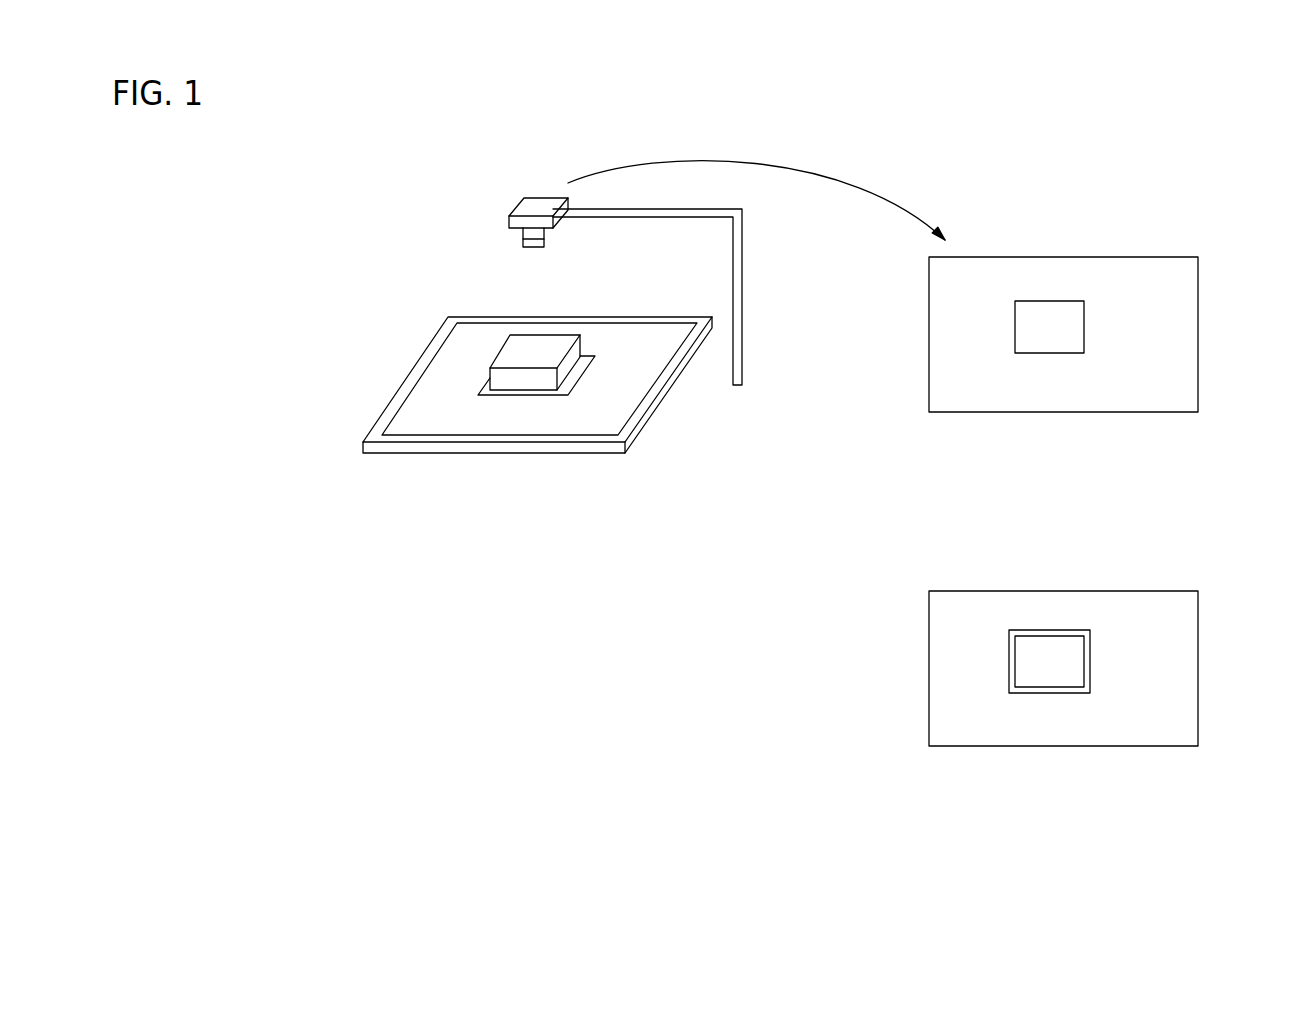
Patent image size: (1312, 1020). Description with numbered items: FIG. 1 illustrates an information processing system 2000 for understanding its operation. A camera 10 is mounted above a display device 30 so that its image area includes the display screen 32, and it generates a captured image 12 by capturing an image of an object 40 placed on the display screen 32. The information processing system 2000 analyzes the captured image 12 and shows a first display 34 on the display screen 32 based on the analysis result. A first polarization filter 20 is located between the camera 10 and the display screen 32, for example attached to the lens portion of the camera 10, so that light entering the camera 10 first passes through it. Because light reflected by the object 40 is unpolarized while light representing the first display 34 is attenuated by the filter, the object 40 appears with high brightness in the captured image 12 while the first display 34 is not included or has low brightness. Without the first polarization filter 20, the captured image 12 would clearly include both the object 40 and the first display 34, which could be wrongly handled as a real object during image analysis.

The information processing system 2000 is at (385, 158).
The camera 10 is at (536, 197).
The captured image 12 is at (1143, 257).
The first polarization filter 20 is at (467, 265).
The display device 30 is at (590, 454).
The display screen 32 is at (540, 456).
The first display 34 is at (532, 396).
The object 40 is at (570, 335).